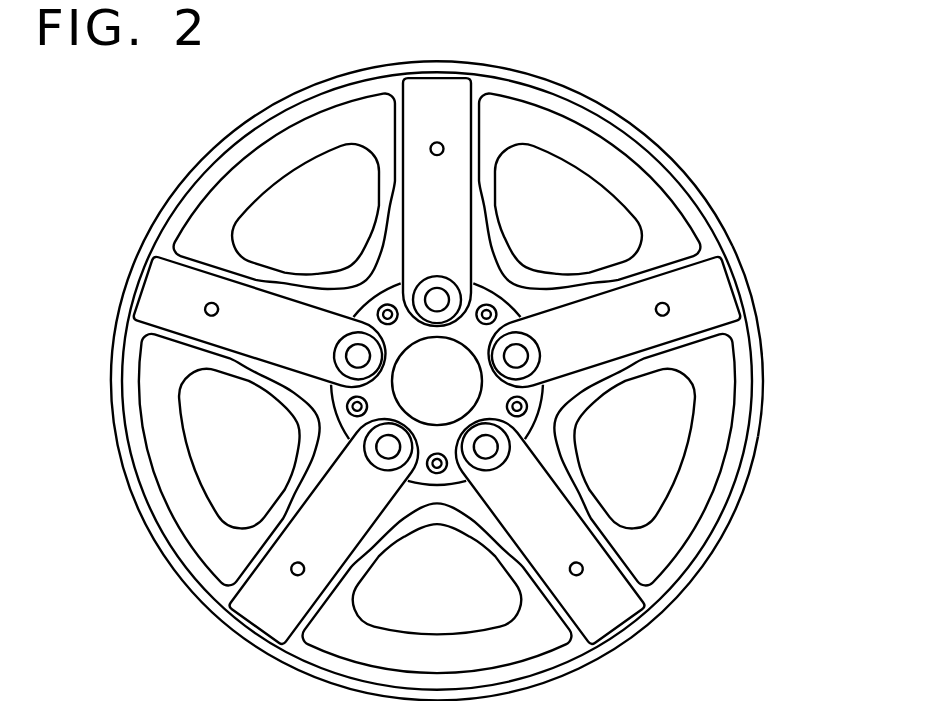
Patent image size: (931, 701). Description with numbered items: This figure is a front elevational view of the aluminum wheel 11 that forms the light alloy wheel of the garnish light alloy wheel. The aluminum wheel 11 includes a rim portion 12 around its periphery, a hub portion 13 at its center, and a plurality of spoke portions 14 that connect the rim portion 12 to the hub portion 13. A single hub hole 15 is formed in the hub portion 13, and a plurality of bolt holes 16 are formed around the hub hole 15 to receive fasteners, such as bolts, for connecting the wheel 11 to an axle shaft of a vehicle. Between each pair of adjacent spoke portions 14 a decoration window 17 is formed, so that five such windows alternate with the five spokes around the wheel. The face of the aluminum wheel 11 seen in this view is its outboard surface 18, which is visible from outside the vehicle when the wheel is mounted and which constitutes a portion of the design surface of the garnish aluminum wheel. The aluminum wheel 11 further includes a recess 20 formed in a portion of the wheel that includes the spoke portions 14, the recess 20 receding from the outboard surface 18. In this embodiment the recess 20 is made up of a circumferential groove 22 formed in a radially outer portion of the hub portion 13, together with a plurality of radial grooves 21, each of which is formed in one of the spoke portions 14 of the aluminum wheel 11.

The aluminum wheel 11 is at (613, 131).
The rim portion 12 is at (657, 145).
The hub portion 13 is at (473, 340).
The spoke portions 14 is at (638, 273).
The hub hole 15 is at (404, 367).
The bolt holes 16 is at (487, 447).
The decoration window 17 is at (547, 162).
The outboard surface 18 is at (742, 347).
The recess 20 is at (325, 293).
The radial grooves 21 is at (406, 191).
The circumferential groove 22 is at (362, 322).